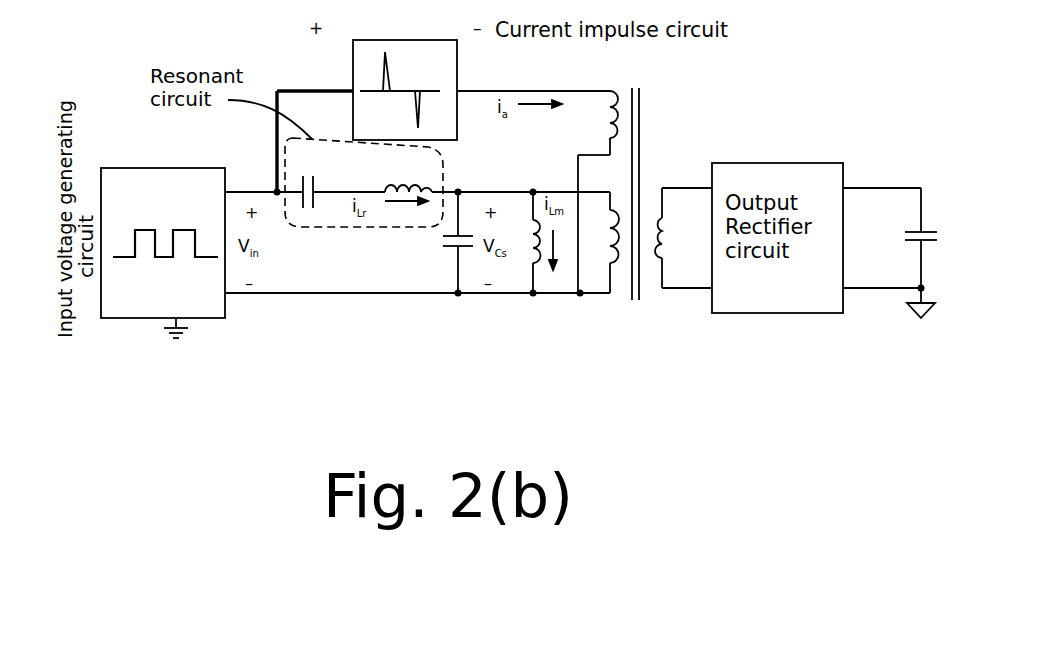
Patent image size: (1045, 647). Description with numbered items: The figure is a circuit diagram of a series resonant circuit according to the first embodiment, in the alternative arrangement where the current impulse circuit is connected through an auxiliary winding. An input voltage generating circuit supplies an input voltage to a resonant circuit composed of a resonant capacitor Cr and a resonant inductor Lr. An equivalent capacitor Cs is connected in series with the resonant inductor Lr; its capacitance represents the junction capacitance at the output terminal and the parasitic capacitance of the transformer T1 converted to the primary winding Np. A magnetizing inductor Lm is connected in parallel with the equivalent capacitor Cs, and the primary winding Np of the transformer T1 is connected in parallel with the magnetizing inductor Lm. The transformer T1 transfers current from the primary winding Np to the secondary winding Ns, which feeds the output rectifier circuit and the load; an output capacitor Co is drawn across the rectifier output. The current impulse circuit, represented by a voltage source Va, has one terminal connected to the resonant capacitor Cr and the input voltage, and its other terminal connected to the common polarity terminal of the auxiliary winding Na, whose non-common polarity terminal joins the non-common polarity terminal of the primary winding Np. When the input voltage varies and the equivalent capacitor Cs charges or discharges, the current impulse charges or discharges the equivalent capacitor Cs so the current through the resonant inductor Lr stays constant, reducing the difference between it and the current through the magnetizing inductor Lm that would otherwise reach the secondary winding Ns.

The current impulse circuit voltage source Va is at (405, 74).
The resonant capacitor Cr is at (304, 178).
The resonant inductor Lr is at (408, 170).
The equivalent capacitor Cs is at (445, 242).
The magnetizing inductor Lm is at (526, 242).
The auxiliary winding Na is at (600, 114).
The primary winding Np is at (602, 230).
The transformer T1 is at (629, 180).
The secondary winding Ns is at (670, 238).
The output capacitor Co is at (924, 238).